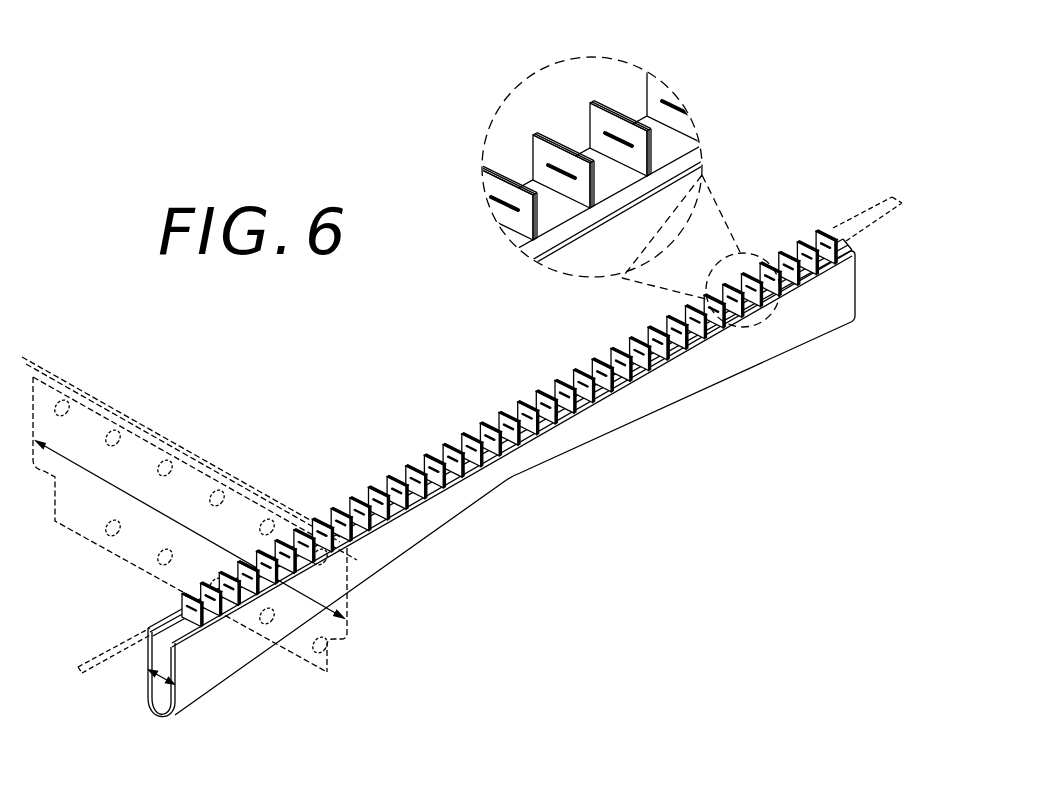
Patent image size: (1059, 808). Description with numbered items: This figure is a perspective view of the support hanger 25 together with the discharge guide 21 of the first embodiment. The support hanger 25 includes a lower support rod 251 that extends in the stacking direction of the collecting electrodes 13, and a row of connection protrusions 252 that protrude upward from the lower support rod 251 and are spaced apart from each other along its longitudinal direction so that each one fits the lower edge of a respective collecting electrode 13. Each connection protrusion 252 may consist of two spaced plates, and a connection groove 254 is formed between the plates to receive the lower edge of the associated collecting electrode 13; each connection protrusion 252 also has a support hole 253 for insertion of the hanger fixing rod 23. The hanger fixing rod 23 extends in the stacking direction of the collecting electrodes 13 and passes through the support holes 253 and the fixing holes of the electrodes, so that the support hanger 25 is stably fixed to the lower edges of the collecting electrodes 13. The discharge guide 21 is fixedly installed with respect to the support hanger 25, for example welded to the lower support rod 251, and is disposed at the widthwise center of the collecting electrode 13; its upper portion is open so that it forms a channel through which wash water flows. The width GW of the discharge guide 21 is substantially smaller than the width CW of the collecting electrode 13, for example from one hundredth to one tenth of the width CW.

The collecting electrode 13 is at (145, 453).
The discharge guide 21 is at (614, 412).
The hanger fixing rod 23 is at (115, 650).
The support hanger 25 is at (468, 405).
The lower support rod 251 is at (423, 497).
The connection protrusion 252 is at (540, 147).
The support hole 253 is at (548, 166).
The connection groove 254 is at (592, 132).
The width of the collecting electrode CW is at (178, 522).
The width of the discharge guide GW is at (163, 673).